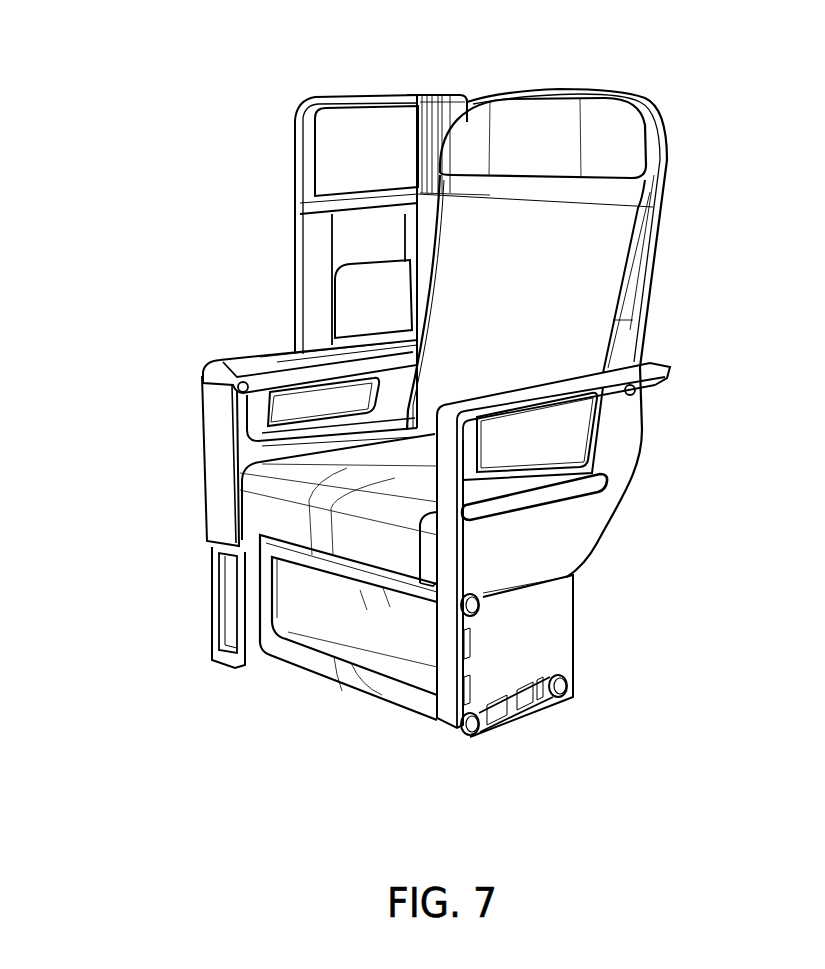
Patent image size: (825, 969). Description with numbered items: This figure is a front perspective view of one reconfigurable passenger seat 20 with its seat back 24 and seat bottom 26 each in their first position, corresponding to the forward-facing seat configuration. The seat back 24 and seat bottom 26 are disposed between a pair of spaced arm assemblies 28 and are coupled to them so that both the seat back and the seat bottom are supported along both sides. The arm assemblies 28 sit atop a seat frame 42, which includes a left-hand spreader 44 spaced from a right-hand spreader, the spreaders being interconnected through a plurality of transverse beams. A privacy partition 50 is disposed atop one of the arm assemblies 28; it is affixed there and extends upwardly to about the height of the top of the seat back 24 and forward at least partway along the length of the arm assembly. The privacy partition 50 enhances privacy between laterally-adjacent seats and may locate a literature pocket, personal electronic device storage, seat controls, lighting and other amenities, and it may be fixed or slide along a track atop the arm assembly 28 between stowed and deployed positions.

The passenger seat 20 is at (683, 103).
The seat back 24 is at (647, 240).
The seat bottom 26 is at (262, 483).
The arm assembly 28 is at (270, 355).
The seat frame 42 is at (530, 678).
The left-hand spreader 44 is at (545, 703).
The privacy partition 50 is at (367, 133).